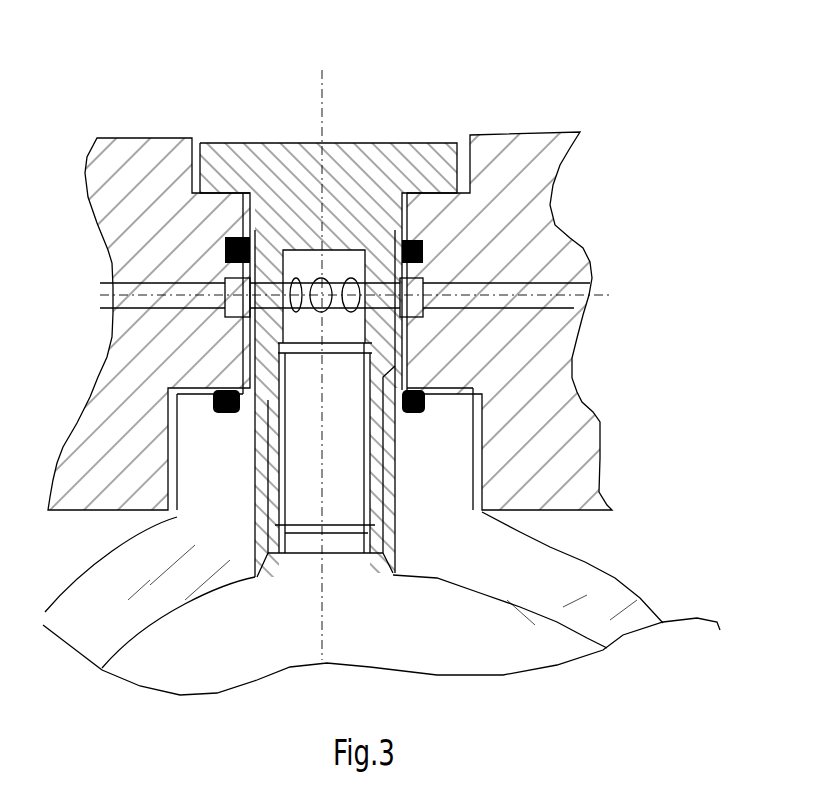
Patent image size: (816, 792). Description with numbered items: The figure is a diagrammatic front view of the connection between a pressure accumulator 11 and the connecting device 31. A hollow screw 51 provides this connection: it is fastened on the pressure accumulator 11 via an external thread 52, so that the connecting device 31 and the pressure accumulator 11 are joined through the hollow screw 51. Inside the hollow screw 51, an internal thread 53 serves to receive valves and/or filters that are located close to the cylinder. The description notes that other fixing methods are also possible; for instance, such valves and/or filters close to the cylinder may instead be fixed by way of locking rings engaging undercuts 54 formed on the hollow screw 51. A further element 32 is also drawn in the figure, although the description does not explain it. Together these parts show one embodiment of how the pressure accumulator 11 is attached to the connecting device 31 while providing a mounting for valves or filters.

The pressure accumulator 11 is at (600, 600).
The connecting device 31 is at (527, 153).
The pin 32 is at (573, 292).
The hollow screw 51 is at (277, 217).
The external thread 52 is at (390, 470).
The internal thread 53 is at (368, 518).
The undercuts 54 is at (280, 528).